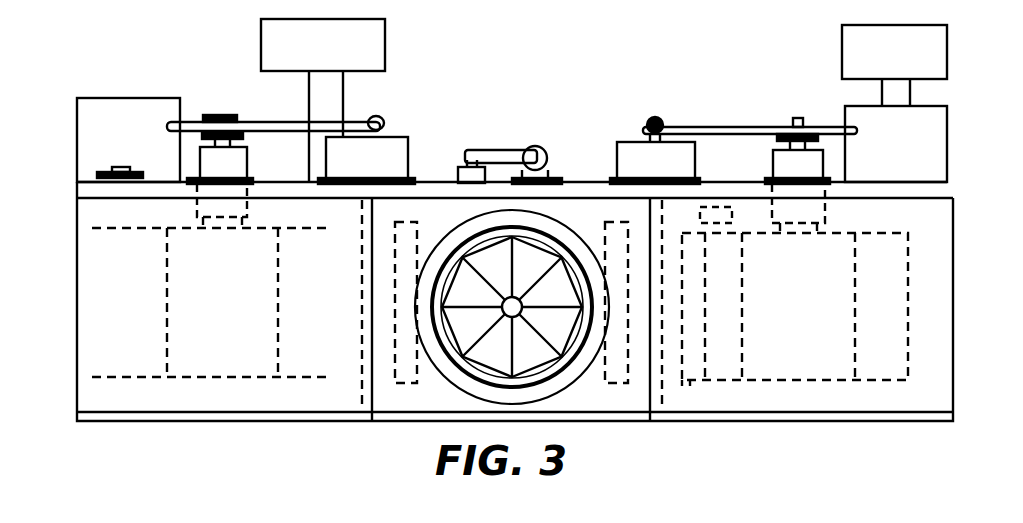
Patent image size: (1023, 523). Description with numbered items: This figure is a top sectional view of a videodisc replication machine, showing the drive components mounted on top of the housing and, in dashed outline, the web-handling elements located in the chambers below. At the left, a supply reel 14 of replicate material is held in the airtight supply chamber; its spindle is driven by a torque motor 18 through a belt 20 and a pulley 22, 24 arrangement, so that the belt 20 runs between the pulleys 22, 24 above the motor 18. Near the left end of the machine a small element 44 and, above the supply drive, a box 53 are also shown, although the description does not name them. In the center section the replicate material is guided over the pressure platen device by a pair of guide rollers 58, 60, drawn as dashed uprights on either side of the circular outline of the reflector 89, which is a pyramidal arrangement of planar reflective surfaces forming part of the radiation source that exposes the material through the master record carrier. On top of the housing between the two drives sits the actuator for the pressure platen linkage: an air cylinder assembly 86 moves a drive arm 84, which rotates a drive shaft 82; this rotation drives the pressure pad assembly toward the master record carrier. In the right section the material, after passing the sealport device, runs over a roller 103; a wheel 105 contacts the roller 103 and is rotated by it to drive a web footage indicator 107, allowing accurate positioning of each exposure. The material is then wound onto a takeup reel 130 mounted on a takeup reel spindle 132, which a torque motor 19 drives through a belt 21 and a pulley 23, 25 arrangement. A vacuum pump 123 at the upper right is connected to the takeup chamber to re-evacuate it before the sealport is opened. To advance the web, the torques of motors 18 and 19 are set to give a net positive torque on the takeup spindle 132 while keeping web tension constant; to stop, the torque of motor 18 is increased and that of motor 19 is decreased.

The supply reel 14 is at (321, 372).
The torque motor 18 is at (409, 155).
The torque motor 19 is at (617, 160).
The belt 20 is at (297, 122).
The belt 21 is at (717, 126).
The pulley 22 is at (383, 118).
The pulley 23 is at (770, 137).
The pulley 24 is at (218, 115).
The pulley 25 is at (654, 117).
The switch 44 is at (137, 168).
The control unit 53 is at (384, 46).
The guide roller 58 is at (417, 385).
The guide roller 60 is at (619, 385).
The drive shaft 82 is at (473, 150).
The drive arm 84 is at (503, 150).
The air cylinder assembly 86 is at (538, 146).
The reflector 89 is at (480, 258).
The roller 103 is at (695, 382).
The wheel 105 is at (695, 243).
The web footage indicator 107 is at (732, 218).
The vacuum pump 123 is at (940, 65).
The takeup reel 130 is at (880, 378).
The takeup reel spindle 132 is at (797, 117).